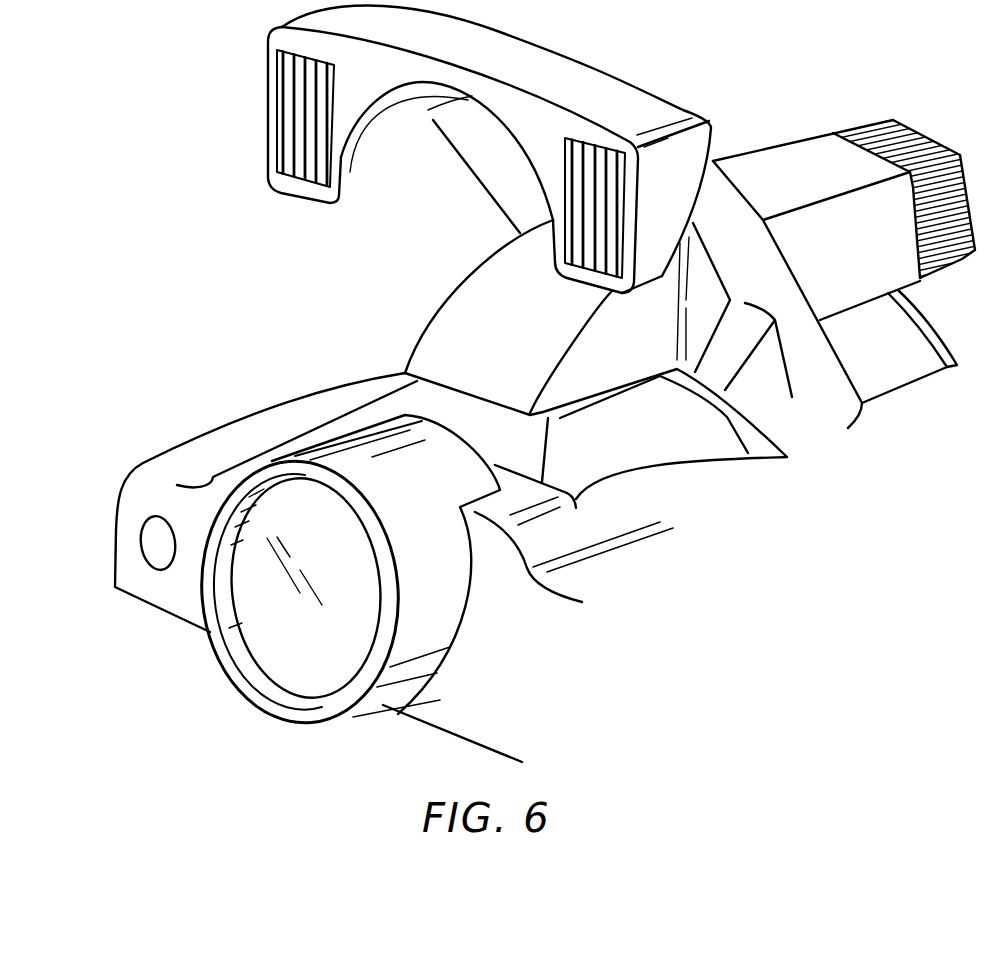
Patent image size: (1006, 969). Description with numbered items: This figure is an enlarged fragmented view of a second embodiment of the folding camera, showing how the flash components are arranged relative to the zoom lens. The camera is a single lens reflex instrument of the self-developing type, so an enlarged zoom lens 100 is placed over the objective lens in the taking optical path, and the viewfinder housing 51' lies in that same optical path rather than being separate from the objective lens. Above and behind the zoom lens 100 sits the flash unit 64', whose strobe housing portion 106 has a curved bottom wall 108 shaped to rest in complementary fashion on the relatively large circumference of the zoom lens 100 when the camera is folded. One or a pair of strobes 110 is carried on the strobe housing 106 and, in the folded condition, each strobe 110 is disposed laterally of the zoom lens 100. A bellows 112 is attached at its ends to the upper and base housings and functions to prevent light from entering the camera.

The flash unit 64' is at (614, 270).
The viewfinder housing 51' is at (851, 252).
The zoom lens 100 is at (452, 595).
The strobe housing portion 106 is at (268, 97).
The curved bottom wall 108 is at (380, 128).
The strobes 110 is at (303, 165).
The bellows 112 is at (705, 426).